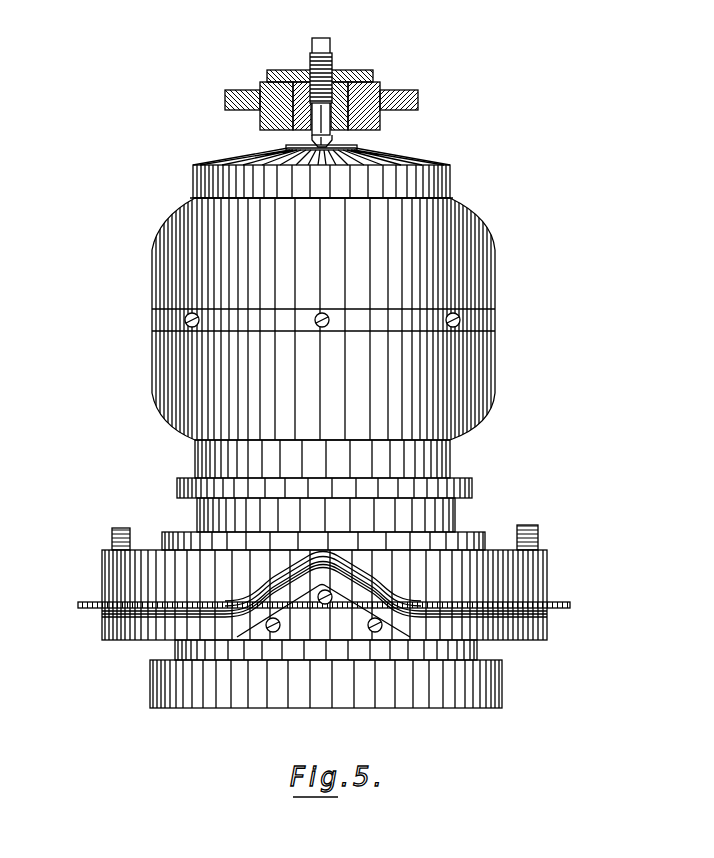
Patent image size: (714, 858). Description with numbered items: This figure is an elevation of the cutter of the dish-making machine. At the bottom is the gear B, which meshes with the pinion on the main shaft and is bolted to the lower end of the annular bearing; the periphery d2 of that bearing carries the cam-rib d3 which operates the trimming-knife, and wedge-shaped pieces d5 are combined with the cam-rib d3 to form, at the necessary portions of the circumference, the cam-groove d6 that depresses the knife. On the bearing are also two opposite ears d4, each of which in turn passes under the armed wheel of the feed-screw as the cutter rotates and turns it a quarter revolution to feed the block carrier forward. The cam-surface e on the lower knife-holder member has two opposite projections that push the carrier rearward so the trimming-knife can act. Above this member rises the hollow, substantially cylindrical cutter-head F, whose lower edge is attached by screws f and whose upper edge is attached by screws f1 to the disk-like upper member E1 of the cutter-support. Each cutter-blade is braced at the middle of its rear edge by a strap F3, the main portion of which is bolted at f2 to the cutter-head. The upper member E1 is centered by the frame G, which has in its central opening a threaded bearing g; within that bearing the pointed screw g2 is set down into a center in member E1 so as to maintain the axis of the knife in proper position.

The bearing g is at (292, 71).
The screw g2 is at (331, 67).
The frame G is at (408, 88).
The member of the cutter-support E1 is at (321, 165).
The screws f1 is at (450, 200).
The cutter-head F is at (494, 280).
The strap or brace F3 is at (468, 319).
The bolt f2 is at (197, 327).
The screws f is at (322, 328).
The cam-surface e is at (177, 489).
The ears d4 is at (112, 538).
The periphery d2 is at (550, 570).
The cam-rib d3 is at (383, 579).
The cam-groove d6 is at (250, 606).
The wedge-shaped pieces d5 is at (323, 611).
The gear B is at (503, 673).